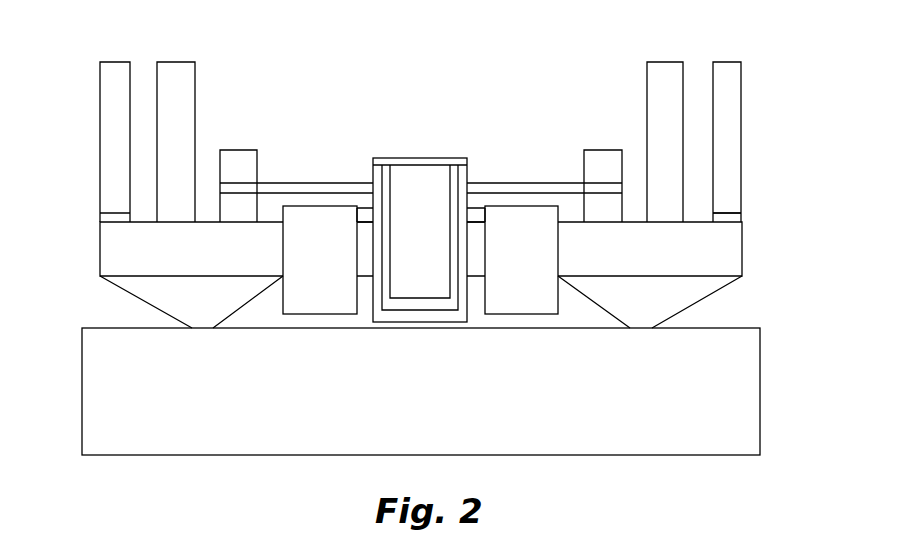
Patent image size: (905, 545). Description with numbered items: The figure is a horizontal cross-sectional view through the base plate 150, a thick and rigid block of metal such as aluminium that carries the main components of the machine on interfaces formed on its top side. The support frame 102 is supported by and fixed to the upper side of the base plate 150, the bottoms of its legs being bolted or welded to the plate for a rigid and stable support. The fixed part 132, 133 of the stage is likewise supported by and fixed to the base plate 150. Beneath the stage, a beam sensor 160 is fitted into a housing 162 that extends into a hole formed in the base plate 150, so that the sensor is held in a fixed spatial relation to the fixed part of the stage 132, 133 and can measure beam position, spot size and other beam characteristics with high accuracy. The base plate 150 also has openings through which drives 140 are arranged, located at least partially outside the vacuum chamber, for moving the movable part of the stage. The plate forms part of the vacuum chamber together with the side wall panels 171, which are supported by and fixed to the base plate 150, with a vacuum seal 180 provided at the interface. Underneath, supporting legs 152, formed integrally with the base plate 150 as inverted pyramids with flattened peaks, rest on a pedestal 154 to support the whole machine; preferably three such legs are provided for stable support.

The support frame 102 is at (196, 88).
The fixed part of the stage 132 is at (238, 150).
The fixed part of the stage 133 is at (283, 183).
The drive 140 is at (322, 206).
The base plate 150 is at (745, 246).
The supporting leg 152 is at (137, 298).
The pedestal 154 is at (748, 388).
The beam sensor 160 is at (405, 187).
The housing 162 is at (440, 158).
The side wall panel 171 is at (113, 96).
The vacuum seal 180 is at (737, 207).